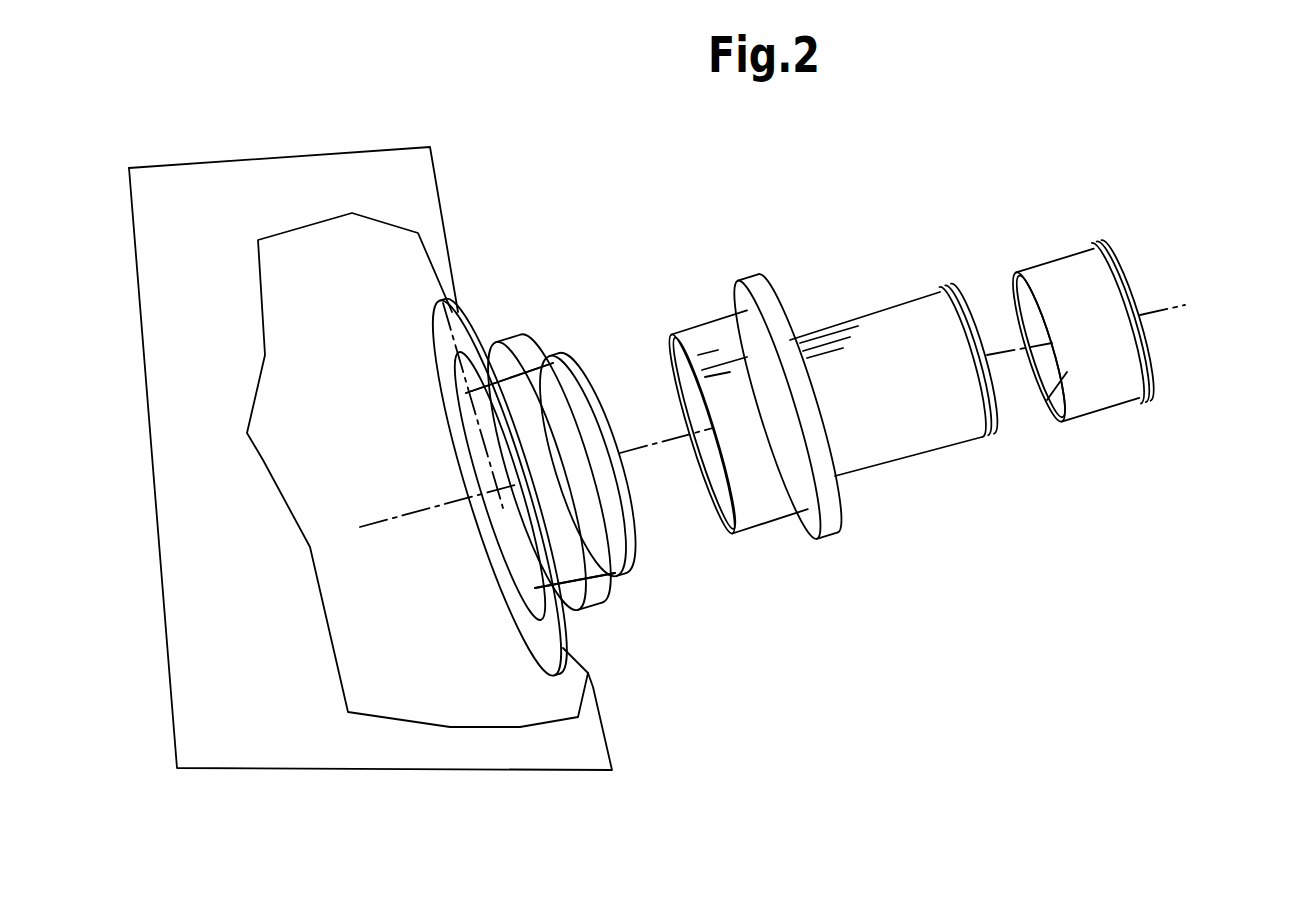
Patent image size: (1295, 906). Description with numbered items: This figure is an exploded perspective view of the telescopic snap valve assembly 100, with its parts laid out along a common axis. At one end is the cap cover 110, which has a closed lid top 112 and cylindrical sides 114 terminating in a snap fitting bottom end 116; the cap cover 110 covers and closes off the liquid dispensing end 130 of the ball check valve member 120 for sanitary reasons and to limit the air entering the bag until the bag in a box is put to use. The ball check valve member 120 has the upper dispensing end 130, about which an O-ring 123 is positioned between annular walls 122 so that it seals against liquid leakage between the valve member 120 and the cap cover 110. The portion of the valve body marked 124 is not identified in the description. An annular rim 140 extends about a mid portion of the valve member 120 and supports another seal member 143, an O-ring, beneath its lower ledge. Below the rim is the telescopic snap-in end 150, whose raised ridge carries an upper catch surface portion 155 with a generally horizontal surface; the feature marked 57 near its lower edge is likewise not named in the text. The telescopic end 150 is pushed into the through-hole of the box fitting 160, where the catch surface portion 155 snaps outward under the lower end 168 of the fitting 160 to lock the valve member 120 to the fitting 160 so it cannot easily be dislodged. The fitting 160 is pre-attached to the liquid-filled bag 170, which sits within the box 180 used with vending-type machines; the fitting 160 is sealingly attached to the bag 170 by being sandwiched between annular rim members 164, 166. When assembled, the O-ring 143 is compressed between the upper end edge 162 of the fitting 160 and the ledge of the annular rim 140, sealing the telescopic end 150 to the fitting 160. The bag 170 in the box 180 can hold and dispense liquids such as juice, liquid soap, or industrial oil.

The opening of tubular member 57 is at (730, 500).
The telescopic snap valve assembly 100 is at (540, 196).
The cap cover 110 is at (1156, 210).
The closed lid top 112 is at (1153, 383).
The cylindrical sides 114 is at (1087, 410).
The snap fitting bottom end 116 is at (1053, 408).
The ball check valve member 120 is at (822, 330).
The annular walls 122 is at (973, 397).
The O-ring 123 is at (982, 438).
The tubular wall 124 is at (890, 448).
The upper dispensing end 130 is at (948, 292).
The annular rim 140 is at (833, 518).
The seal member 143 is at (757, 313).
The telescopic snap-in end 150 is at (773, 520).
The upper catch surface portion 155 is at (728, 438).
The box fitting 160 is at (580, 612).
The upper end edge 162 is at (620, 580).
The annular rim member 164 is at (585, 602).
The annular rim member 166 is at (527, 630).
The lower end 168 is at (503, 540).
The bag 170 is at (508, 712).
The box 180 is at (557, 760).